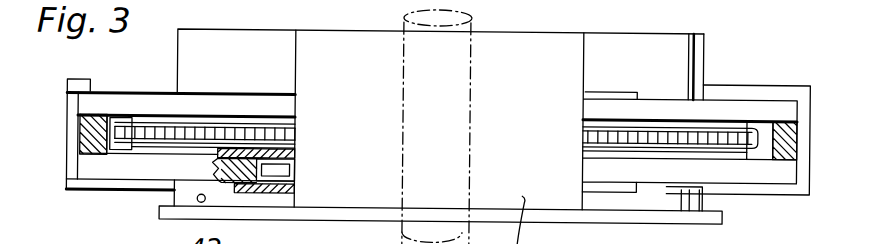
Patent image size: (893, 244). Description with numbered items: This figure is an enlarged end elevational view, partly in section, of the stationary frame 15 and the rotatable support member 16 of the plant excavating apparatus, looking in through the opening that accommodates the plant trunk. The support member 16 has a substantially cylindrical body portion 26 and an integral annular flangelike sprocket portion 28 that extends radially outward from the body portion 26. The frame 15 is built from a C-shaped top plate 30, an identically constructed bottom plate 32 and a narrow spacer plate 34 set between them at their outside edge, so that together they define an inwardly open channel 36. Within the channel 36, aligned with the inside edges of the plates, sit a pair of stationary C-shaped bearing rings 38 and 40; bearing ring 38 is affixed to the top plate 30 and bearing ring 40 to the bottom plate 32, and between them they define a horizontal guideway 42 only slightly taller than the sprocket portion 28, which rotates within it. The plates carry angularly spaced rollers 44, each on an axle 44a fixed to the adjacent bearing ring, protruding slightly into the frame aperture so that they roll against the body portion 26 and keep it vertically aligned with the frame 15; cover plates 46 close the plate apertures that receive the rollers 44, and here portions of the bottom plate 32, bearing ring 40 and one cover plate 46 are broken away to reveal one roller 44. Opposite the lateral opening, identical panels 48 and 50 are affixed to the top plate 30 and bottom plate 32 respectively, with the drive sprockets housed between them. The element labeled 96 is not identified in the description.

The stationary frame 15 is at (108, 84).
The support member 16 is at (258, 52).
The cylindrical body portion 26 is at (283, 54).
The sprocket portion 28 is at (238, 115).
The top plate 30 is at (89, 100).
The bottom plate 32 is at (101, 168).
The spacer plate 34 is at (80, 134).
The channel 36 is at (123, 115).
The bearing ring 38 is at (165, 115).
The bearing ring 40 is at (146, 156).
The guideway 42 is at (210, 116).
The rollers 44 is at (296, 172).
The axle 44a is at (296, 142).
The cover plates 46 is at (270, 193).
The panel 48 is at (67, 85).
The panel 50 is at (68, 185).
The housing wall 96 is at (296, 91).